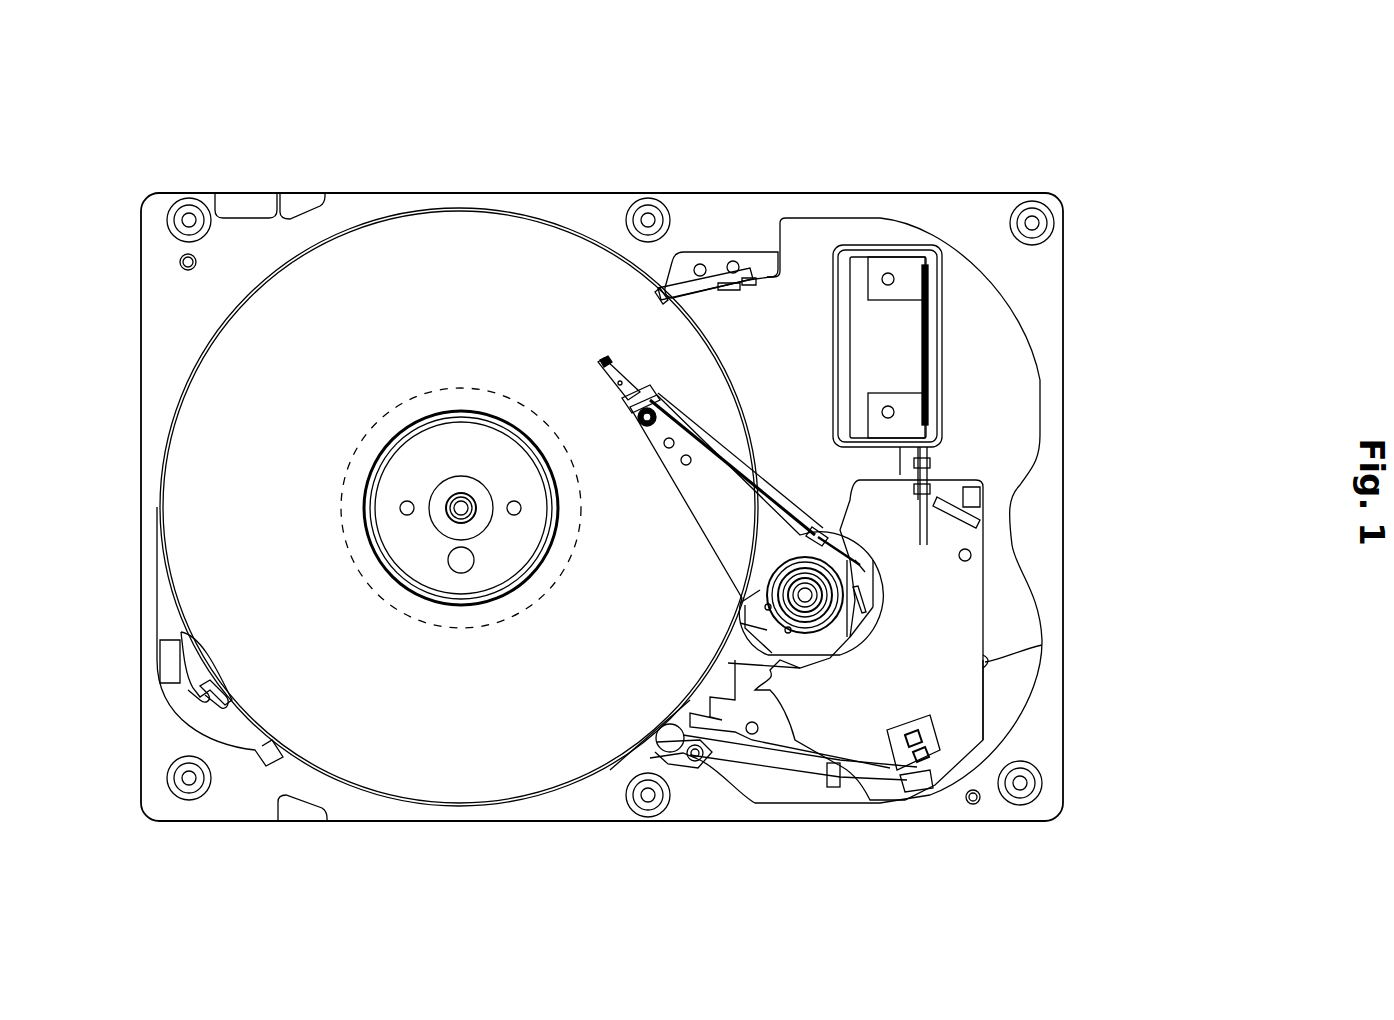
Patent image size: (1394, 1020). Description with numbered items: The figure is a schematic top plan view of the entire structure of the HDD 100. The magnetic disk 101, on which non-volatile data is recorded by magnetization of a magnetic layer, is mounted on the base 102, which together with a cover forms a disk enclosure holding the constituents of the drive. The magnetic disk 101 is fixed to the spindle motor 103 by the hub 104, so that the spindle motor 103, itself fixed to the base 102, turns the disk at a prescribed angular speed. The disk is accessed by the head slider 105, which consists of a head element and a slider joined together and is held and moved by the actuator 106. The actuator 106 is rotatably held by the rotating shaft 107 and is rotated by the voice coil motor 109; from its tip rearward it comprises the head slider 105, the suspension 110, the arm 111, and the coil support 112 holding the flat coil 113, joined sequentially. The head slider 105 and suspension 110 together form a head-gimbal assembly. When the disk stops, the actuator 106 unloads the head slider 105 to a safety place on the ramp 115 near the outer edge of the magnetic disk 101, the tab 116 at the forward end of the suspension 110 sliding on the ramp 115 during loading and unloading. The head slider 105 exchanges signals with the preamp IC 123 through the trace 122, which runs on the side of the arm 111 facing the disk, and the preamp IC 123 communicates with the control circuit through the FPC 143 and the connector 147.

The HDD 100 is at (862, 150).
The magnetic disk 101 is at (141, 600).
The base 102 is at (141, 315).
The spindle motor 103 is at (478, 628).
The hub 104 is at (455, 410).
The head slider 105 is at (594, 373).
The actuator 106 is at (715, 493).
The rotating shaft 107 is at (727, 635).
The voice coil motor 109 is at (1008, 602).
The suspension 110 is at (616, 398).
The arm 111 is at (688, 495).
The coil support 112 is at (1047, 646).
The flat coil 113 is at (840, 637).
The ramp 115 is at (705, 286).
The tab 116 is at (598, 358).
The trace 122 is at (690, 438).
The preamp IC 123 is at (818, 535).
The FPC 143 is at (862, 483).
The connector 147 is at (835, 272).